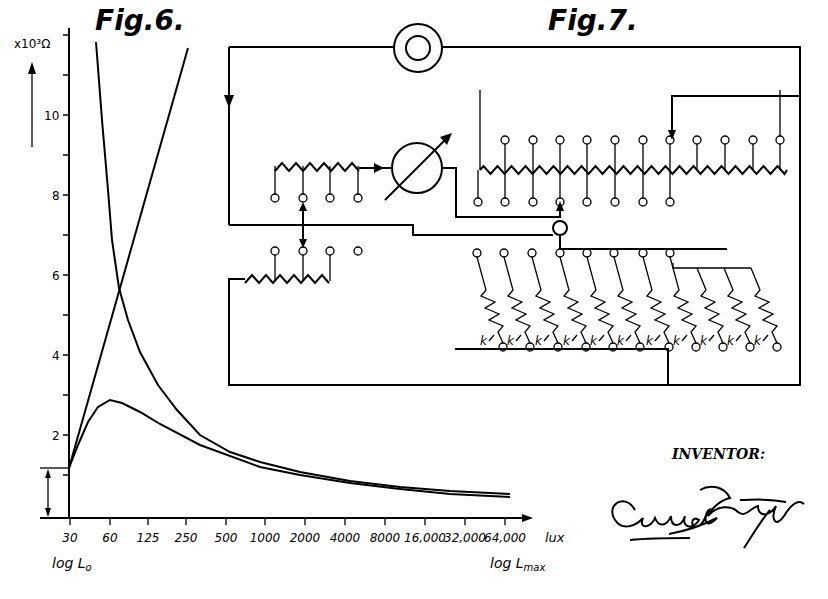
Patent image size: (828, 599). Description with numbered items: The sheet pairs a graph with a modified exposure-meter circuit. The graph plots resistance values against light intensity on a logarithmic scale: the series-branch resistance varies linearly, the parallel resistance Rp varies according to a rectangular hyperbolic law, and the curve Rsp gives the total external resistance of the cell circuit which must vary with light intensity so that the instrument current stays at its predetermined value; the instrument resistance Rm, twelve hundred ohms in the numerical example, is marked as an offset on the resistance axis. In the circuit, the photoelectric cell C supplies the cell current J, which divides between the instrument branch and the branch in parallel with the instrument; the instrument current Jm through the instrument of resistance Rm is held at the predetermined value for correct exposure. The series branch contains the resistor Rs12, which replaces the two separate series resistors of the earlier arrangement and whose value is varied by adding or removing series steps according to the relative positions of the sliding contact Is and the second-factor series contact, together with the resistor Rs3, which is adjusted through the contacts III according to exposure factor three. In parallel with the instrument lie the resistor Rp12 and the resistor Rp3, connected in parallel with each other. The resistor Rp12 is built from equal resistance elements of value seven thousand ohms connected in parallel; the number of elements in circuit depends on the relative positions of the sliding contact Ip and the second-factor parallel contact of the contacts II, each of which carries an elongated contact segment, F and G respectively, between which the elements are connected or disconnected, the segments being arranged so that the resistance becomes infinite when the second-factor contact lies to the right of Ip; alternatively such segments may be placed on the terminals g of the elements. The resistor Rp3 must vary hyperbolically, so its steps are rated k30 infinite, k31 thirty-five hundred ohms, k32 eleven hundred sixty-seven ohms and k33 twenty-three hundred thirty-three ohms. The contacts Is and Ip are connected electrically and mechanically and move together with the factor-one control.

In FIG. 6, the parallel resistance Rp is at (268, 458).
In FIG. 6, the total external resistance curve Rsp is at (124, 410).
In FIG. 6, the instrument resistance Rm is at (41, 492).
In FIG. 7, the instrument resistance Rm is at (408, 152).
In FIG. 7, the photoelectric cell C is at (443, 46).
In FIG. 7, the cell current J is at (231, 105).
In FIG. 7, the third series resistor Rs3 is at (301, 164).
In FIG. 7, the instrument current Jm is at (375, 159).
In FIG. 7, the combined series resistor Rs12 is at (780, 90).
In FIG. 7, the series sliding contact for factor I Is is at (674, 117).
In FIG. 7, the sliding contacts for factor III is at (314, 220).
In FIG. 7, the third parallel resistor Rp3 is at (303, 278).
In FIG. 7, the resistance step of Rp3 k33 is at (265, 264).
In FIG. 7, the resistance step of Rp3 k32 is at (294, 264).
In FIG. 7, the resistance step of Rp3 k31 is at (321, 264).
In FIG. 7, the resistance step of Rp3 k30 is at (350, 260).
In FIG. 7, the sliding contacts for factor II is at (610, 231).
In FIG. 7, the elongated contact segment of contact IIp G is at (665, 249).
In FIG. 7, the combined parallel resistor Rp12 is at (471, 255).
In FIG. 7, the elongated contact segment of contact Ip F is at (484, 352).
In FIG. 7, the terminals of the resistance elements g is at (641, 351).
In FIG. 7, the parallel sliding contact for factor I Ip is at (669, 373).